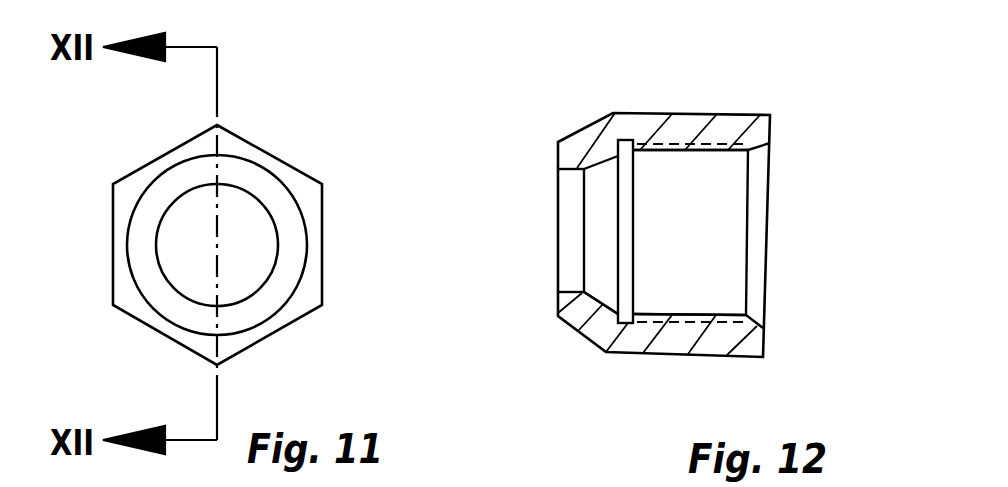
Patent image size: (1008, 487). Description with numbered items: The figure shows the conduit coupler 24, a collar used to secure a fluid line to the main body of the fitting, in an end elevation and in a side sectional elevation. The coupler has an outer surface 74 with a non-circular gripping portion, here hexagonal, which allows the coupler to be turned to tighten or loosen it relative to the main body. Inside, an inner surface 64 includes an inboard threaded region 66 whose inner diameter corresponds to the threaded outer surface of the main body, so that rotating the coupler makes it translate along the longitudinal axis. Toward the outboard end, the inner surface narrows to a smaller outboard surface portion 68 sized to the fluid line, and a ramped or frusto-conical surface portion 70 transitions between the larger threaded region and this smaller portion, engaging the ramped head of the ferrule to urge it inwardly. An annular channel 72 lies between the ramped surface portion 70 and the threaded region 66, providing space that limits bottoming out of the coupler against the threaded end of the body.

In FIG. 11, the conduit coupler 24 is at (247, 207).
In FIG. 12, the conduit coupler 24 is at (712, 61).
In FIG. 11, the outer surface 74 is at (261, 146).
In FIG. 12, the outer surface 74 is at (640, 110).
In FIG. 12, the inner surface 64 is at (706, 168).
In FIG. 12, the inboard threaded region 66 is at (734, 160).
In FIG. 12, the outboard surface portion 68 is at (566, 286).
In FIG. 12, the ramped surface portion 70 is at (601, 289).
In FIG. 12, the annular channel 72 is at (634, 238).